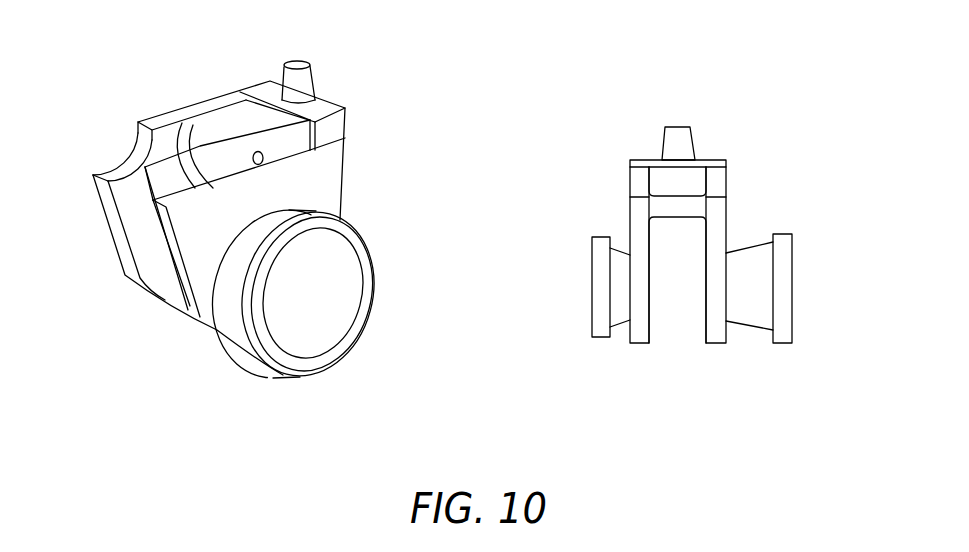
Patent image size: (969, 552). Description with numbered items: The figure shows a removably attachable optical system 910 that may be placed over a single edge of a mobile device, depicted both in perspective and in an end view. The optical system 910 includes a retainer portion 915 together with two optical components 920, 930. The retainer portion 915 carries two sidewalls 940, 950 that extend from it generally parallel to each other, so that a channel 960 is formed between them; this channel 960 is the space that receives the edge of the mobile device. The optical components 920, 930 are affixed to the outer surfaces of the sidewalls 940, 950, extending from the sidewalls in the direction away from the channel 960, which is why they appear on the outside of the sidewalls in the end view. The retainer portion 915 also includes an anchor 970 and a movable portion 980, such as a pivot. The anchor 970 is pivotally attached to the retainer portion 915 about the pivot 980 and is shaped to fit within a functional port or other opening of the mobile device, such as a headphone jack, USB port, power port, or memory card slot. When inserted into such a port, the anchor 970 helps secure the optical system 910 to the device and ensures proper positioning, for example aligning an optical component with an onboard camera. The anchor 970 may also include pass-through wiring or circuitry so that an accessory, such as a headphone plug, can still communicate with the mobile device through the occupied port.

The optical system 910 is at (170, 98).
The retainer portion 915 is at (168, 166).
The optical component 920 is at (300, 330).
The optical component 930 is at (600, 296).
The sidewall 940 is at (203, 272).
The sidewall 950 is at (113, 230).
The channel 960 is at (160, 278).
The anchor 970 is at (307, 82).
The movable portion 980 is at (264, 161).